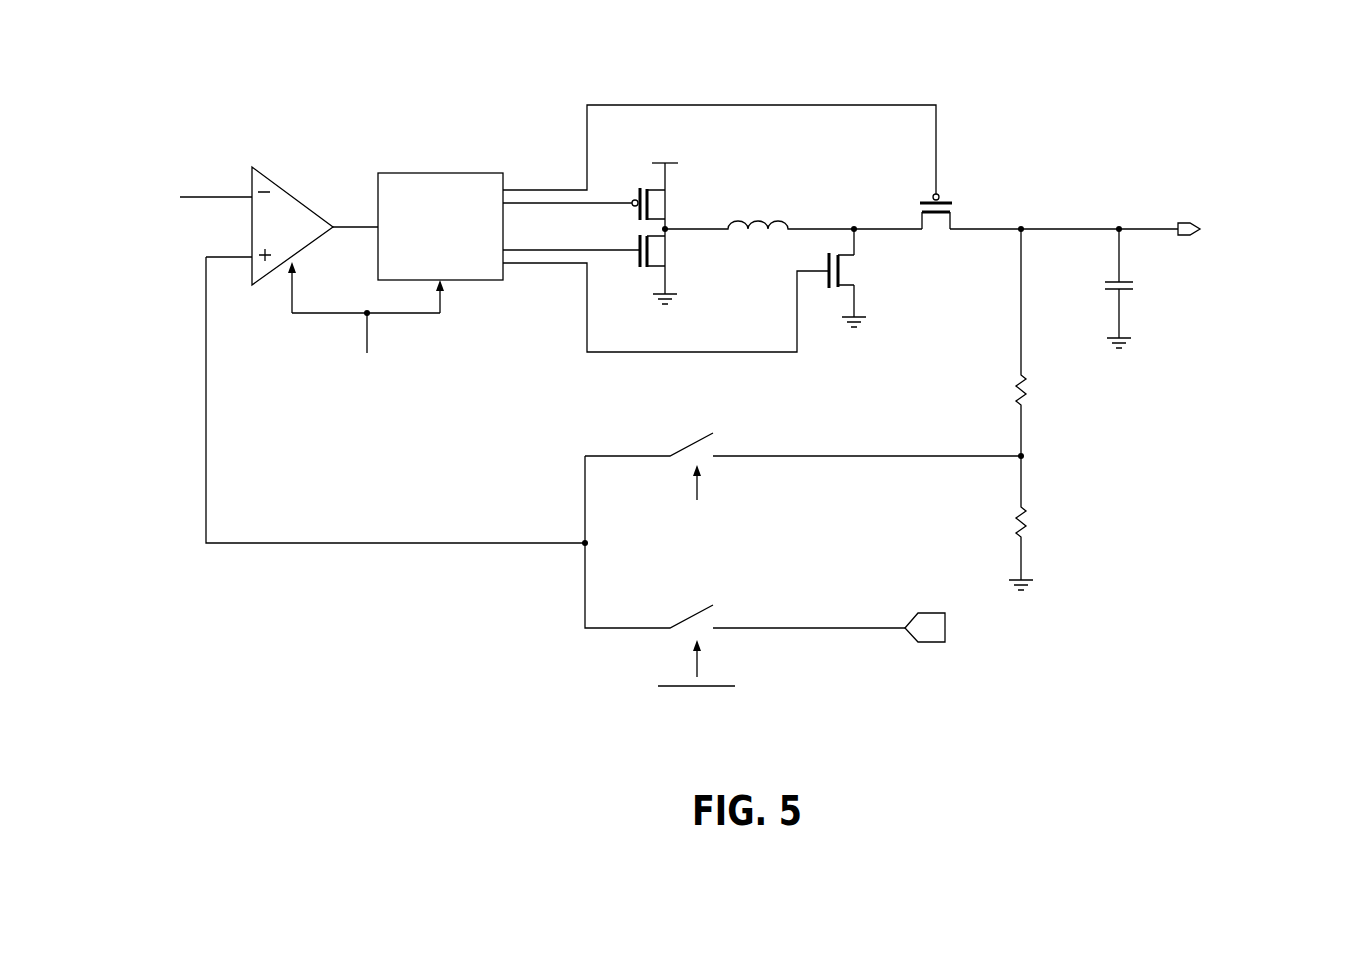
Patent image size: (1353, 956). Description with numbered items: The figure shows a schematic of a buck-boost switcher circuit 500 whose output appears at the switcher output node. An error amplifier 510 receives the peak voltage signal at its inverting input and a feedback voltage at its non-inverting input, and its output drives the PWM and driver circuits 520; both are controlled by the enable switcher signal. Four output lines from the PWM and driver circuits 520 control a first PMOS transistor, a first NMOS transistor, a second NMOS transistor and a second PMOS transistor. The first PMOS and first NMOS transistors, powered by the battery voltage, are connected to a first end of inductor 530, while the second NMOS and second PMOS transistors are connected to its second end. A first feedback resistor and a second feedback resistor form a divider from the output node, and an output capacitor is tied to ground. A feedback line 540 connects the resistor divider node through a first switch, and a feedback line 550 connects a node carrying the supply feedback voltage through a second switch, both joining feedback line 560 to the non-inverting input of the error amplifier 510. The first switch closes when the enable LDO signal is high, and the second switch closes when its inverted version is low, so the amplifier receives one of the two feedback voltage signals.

The switcher circuit 500 is at (1142, 76).
The error amplifier 510 is at (292, 193).
The PWM and driver circuits 520 is at (458, 173).
The inductor 530 is at (757, 220).
The feedback line 540 is at (808, 453).
The feedback line 550 is at (808, 625).
The feedback line 560 is at (357, 543).